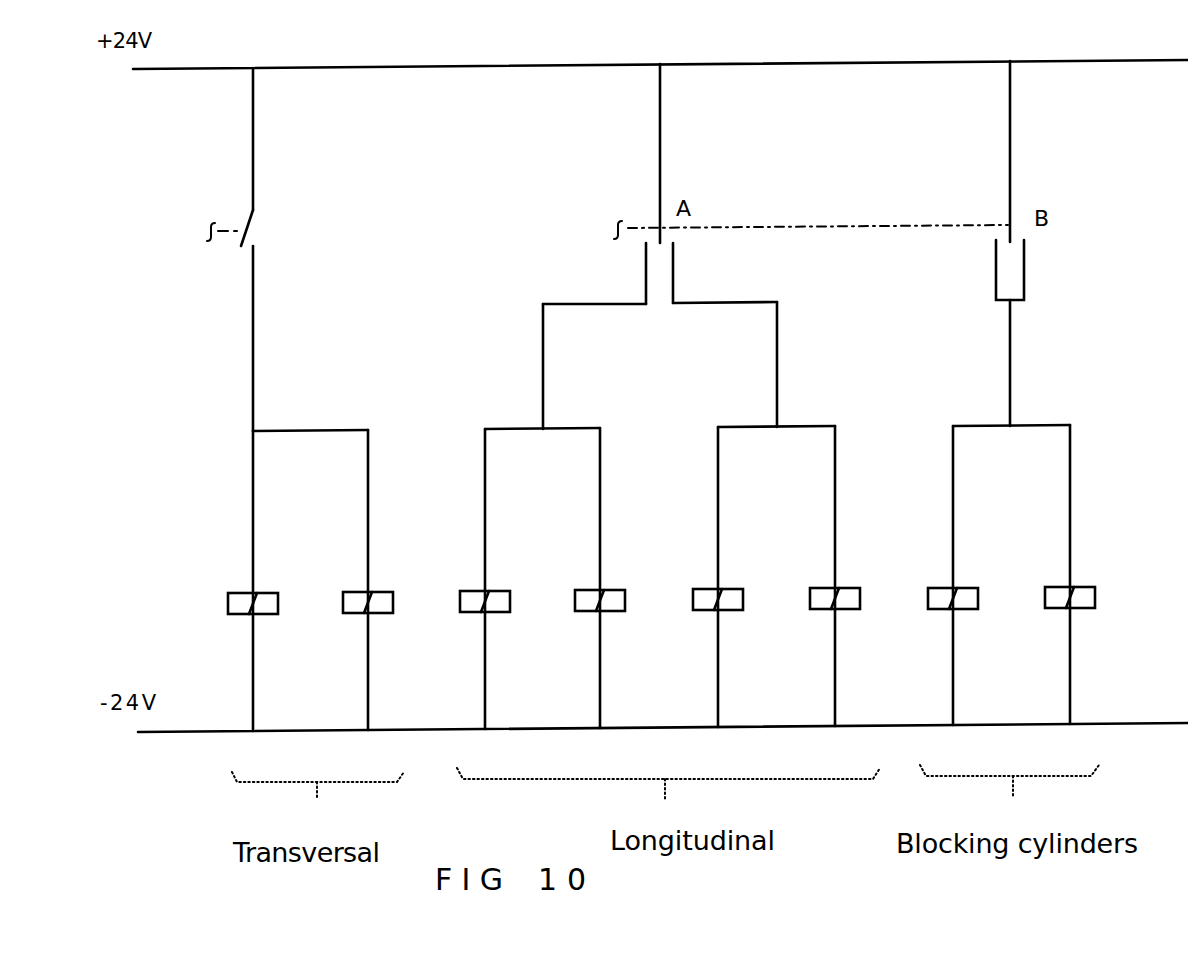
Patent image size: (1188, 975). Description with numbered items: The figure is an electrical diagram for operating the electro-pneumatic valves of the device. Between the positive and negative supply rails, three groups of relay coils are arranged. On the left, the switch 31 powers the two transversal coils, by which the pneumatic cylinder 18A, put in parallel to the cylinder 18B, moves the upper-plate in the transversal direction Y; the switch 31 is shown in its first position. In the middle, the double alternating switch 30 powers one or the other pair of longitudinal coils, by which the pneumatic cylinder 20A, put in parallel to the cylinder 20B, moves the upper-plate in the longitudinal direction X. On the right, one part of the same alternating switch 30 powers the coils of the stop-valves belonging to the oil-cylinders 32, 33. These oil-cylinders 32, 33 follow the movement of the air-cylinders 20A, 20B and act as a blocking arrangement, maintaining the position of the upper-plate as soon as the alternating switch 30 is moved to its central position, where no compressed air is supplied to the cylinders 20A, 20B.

The switch 31 is at (208, 228).
The alternating switch 30 is at (787, 230).
The pneumatic cylinder 18B is at (243, 603).
The pneumatic cylinder 18A is at (359, 602).
The pneumatic cylinder 20B is at (592, 600).
The pneumatic cylinder 20A is at (707, 599).
The oil-cylinder 33 is at (940, 597).
The oil-cylinder 32 is at (1057, 596).